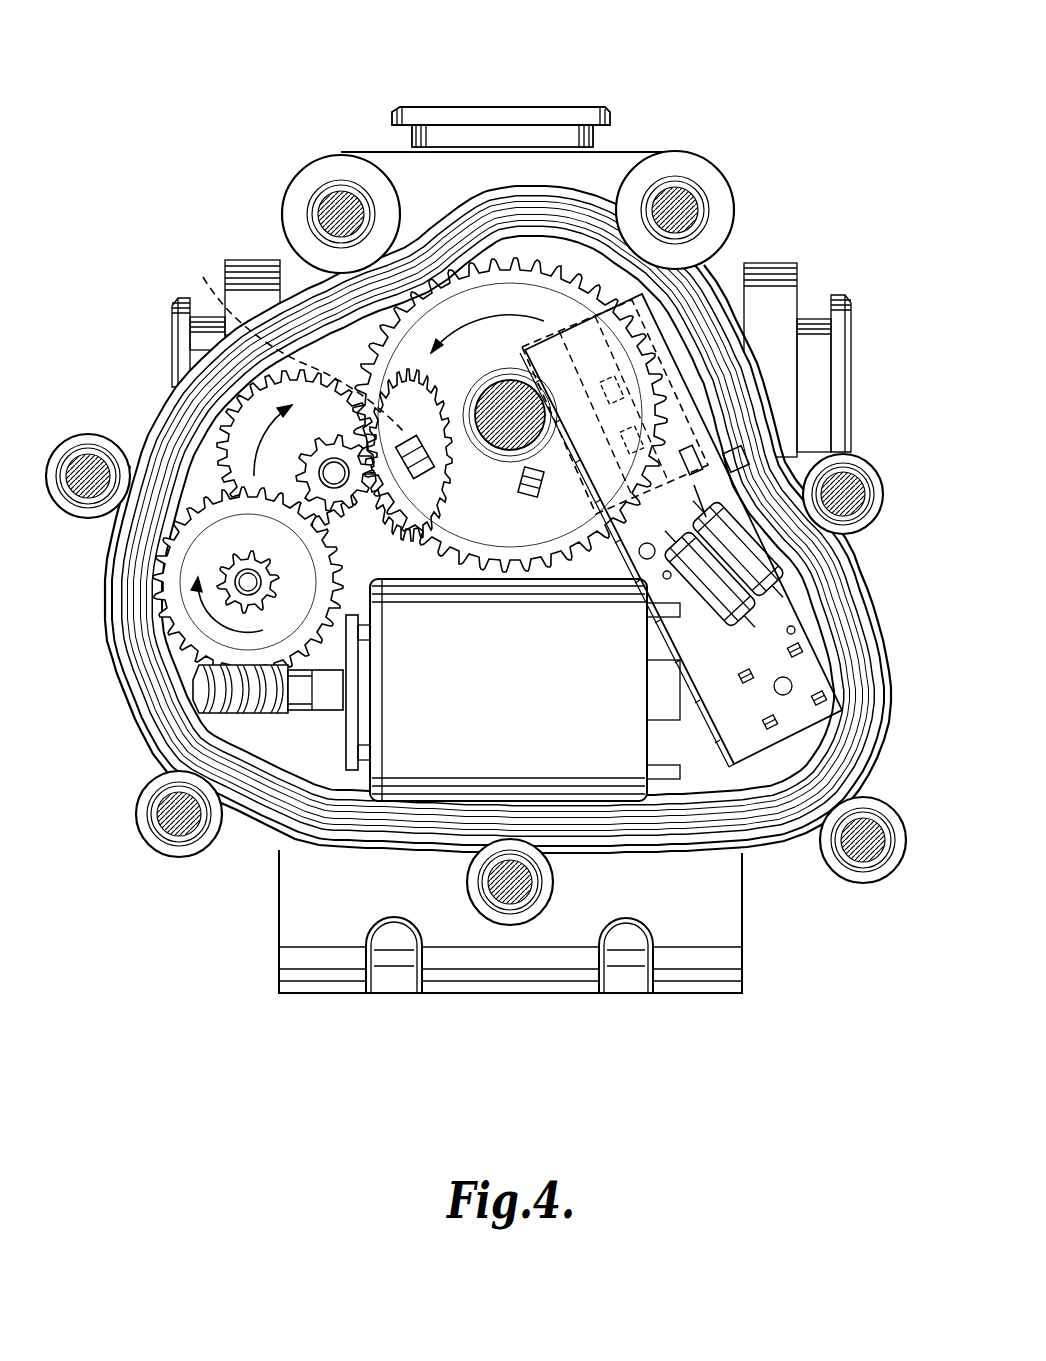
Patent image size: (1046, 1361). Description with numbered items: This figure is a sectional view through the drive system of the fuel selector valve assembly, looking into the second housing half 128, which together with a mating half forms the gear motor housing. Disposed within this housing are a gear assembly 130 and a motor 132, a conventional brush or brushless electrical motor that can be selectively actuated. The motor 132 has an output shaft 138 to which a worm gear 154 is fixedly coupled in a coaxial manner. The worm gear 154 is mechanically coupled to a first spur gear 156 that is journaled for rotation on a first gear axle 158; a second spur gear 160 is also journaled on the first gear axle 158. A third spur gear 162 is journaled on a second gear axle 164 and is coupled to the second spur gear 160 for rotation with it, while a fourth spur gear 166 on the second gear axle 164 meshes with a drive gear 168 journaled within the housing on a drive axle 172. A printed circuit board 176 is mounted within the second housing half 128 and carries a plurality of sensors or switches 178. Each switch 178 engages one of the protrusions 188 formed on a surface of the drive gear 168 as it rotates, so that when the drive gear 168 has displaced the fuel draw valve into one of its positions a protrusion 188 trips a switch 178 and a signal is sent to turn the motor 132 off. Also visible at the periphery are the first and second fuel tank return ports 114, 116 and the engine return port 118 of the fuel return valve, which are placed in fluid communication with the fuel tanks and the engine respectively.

The first fuel tank return port 114 is at (166, 335).
The second fuel tank return port 116 is at (855, 364).
The engine return port 118 is at (522, 95).
The second housing half 128 is at (710, 275).
The gear assembly 130 is at (388, 299).
The motor 132 is at (601, 783).
The output shaft 138 is at (352, 712).
The worm gear 154 is at (223, 720).
The first spur gear 156 is at (183, 657).
The first gear axle 158 is at (244, 582).
The second spur gear 160 is at (232, 558).
The third spur gear 162 is at (318, 402).
The second gear axle 164 is at (327, 469).
The fourth spur gear 166 is at (263, 402).
The drive gear 168 is at (556, 300).
The drive axle 172 is at (378, 408).
The printed circuit board 176 is at (815, 664).
The switch 178 is at (676, 422).
The protrusion 188 is at (295, 342).